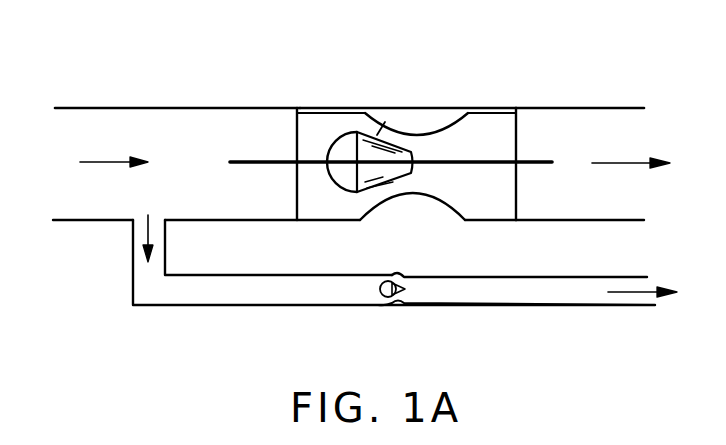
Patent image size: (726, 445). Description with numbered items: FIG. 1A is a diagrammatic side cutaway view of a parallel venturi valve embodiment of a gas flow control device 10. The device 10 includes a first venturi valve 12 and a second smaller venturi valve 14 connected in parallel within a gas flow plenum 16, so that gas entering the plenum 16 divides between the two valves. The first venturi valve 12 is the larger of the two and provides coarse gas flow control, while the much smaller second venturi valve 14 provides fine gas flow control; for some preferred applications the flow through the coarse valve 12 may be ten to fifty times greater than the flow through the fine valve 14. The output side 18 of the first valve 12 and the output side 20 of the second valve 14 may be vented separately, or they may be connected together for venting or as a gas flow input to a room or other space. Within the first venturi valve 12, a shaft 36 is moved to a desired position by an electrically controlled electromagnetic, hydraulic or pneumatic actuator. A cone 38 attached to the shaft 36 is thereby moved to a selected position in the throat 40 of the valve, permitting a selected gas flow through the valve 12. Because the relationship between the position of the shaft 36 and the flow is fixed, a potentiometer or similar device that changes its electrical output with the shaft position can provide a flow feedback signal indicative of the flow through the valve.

The gas flow control device 10 is at (267, 60).
The first venturi valve 12 is at (330, 125).
The second smaller venturi valve 14 is at (398, 307).
The gas flow plenum 16 is at (114, 108).
The output side 18 is at (550, 122).
The output side 20 is at (507, 297).
The shaft 36 is at (273, 160).
The cone 38 is at (387, 121).
The throat 40 is at (418, 134).